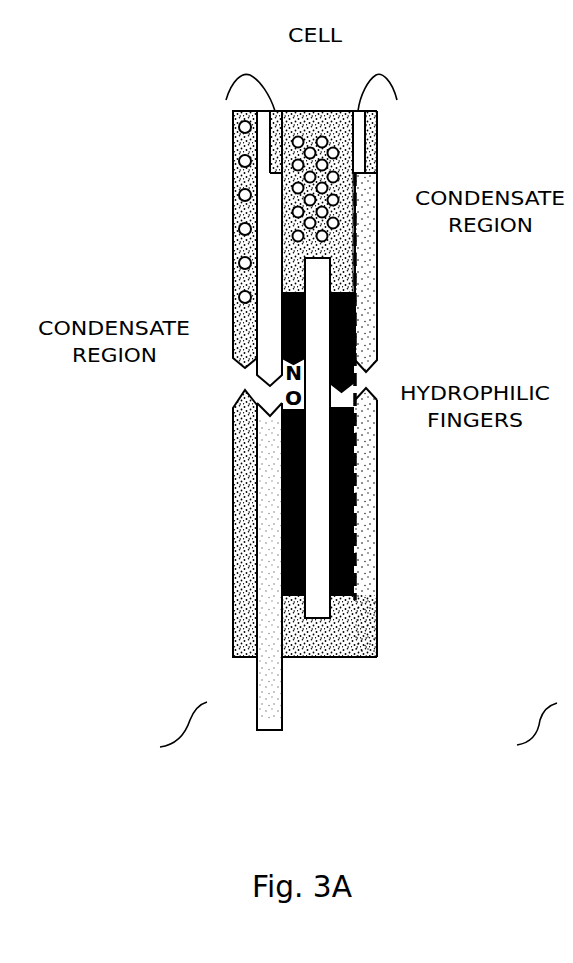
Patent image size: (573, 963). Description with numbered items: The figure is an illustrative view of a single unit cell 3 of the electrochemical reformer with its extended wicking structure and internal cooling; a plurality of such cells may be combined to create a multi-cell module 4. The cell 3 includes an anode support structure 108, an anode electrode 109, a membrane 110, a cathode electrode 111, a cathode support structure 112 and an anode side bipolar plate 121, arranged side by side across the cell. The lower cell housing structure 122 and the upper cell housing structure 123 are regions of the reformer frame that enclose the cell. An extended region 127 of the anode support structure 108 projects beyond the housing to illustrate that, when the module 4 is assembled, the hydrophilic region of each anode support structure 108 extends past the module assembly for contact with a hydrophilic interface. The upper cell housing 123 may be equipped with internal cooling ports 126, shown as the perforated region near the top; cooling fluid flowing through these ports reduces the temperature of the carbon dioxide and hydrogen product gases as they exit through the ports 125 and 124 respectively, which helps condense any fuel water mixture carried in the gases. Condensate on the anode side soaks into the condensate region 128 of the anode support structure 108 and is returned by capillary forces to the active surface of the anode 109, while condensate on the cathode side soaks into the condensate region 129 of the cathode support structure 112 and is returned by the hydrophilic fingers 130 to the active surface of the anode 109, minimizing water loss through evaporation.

The cell 3 is at (162, 733).
The multi-cell module 4 is at (516, 733).
The anode support structure 108 is at (270, 508).
The anode electrode 109 is at (285, 538).
The membrane 110 is at (315, 502).
The cathode electrode 111 is at (347, 462).
The cathode support structure 112 is at (363, 430).
The anode side bipolar plate 121 is at (243, 448).
The lower cell housing structure 122 is at (352, 617).
The upper cell housing structure 123 is at (342, 278).
The hydrogen product gas port 124 is at (397, 100).
The carbon dioxide product gas port 125 is at (226, 100).
The internal cooling ports 126 is at (300, 193).
The extended region of anode support structure 127 is at (270, 713).
The condensate region of anode support structure 128 is at (264, 224).
The condensate region of cathode support structure 129 is at (365, 218).
The hydrophilic fingers 130 is at (338, 316).